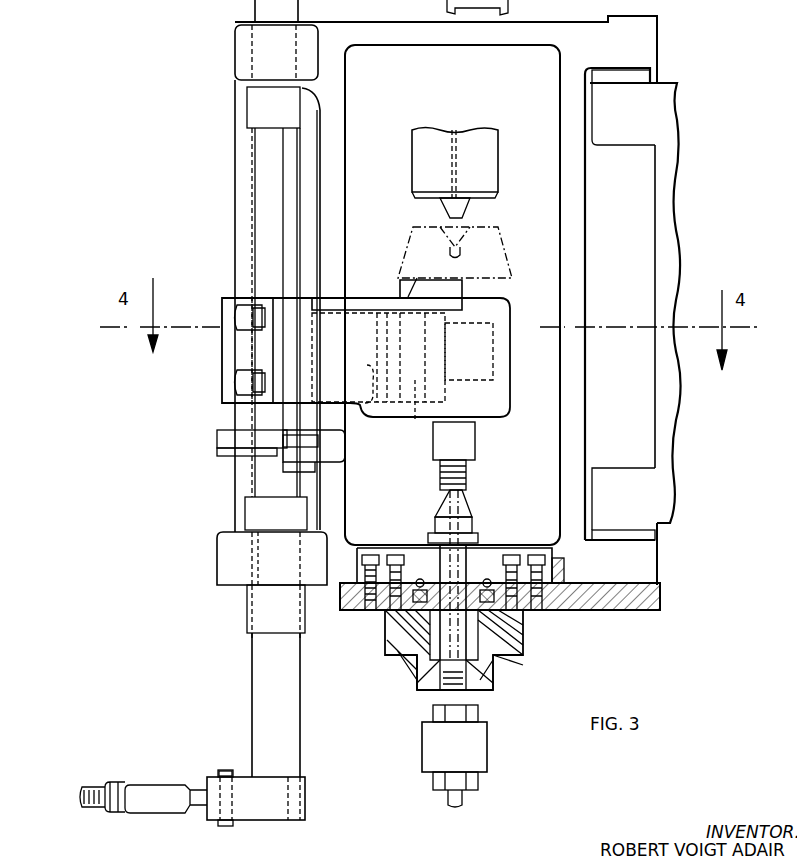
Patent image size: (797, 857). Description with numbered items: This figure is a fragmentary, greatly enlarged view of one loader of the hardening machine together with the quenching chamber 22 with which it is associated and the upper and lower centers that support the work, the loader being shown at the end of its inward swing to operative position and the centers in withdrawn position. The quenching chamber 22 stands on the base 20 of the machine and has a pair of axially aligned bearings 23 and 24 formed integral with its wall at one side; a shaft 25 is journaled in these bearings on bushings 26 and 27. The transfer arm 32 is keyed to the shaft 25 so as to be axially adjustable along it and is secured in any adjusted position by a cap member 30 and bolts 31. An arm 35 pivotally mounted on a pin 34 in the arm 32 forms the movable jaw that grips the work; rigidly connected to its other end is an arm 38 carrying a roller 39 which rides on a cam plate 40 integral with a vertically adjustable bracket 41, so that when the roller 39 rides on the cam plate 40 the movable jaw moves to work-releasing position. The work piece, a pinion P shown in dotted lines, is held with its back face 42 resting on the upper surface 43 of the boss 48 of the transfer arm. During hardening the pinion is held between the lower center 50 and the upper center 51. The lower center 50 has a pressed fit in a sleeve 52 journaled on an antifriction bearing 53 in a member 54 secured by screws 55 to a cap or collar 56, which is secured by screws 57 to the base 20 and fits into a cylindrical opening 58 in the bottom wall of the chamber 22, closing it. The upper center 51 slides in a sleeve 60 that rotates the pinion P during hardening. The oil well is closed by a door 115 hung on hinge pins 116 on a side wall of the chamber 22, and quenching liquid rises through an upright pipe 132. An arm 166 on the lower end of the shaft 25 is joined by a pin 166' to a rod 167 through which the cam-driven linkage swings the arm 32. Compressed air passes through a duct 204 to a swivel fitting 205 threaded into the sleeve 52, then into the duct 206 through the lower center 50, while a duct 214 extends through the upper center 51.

The base 20 is at (592, 610).
The quenching chamber 22 is at (572, 447).
The bearing 23 is at (312, 30).
The bearing 24 is at (222, 560).
The shaft 25 is at (272, 237).
The bushing 26 is at (235, 58).
The bushing 27 is at (245, 548).
The cap member 30 is at (222, 358).
The bolts 31 is at (252, 320).
The transfer arm 32 is at (503, 378).
The pin 34 is at (367, 405).
The arm 35 is at (415, 418).
The arm 38 is at (335, 447).
The roller 39 is at (290, 448).
The cam plate 40 is at (220, 441).
The bracket 41 is at (243, 455).
The back face 42 is at (480, 283).
The upper surface 43 is at (433, 278).
The boss 48 is at (492, 293).
The lower center 50 is at (468, 529).
The upper center 51 is at (465, 205).
The sleeve 52 is at (440, 620).
The antifriction bearing 53 is at (495, 585).
The member 54 is at (508, 650).
The screws 55 is at (512, 556).
The cap or collar 56 is at (555, 568).
The screws 57 is at (370, 560).
The cylindrical opening 58 is at (540, 556).
The sleeve 60 is at (487, 172).
The door 115 is at (672, 278).
The hinge pins 116 is at (656, 535).
The upright pipe 132 is at (506, 6).
The arm 166 is at (256, 812).
The pin 166' is at (204, 756).
The rod 167 is at (85, 805).
The duct 204 is at (450, 797).
The swivel fitting 205 is at (480, 750).
The duct 206 is at (455, 512).
The duct 214 is at (452, 140).
The work piece P is at (478, 245).